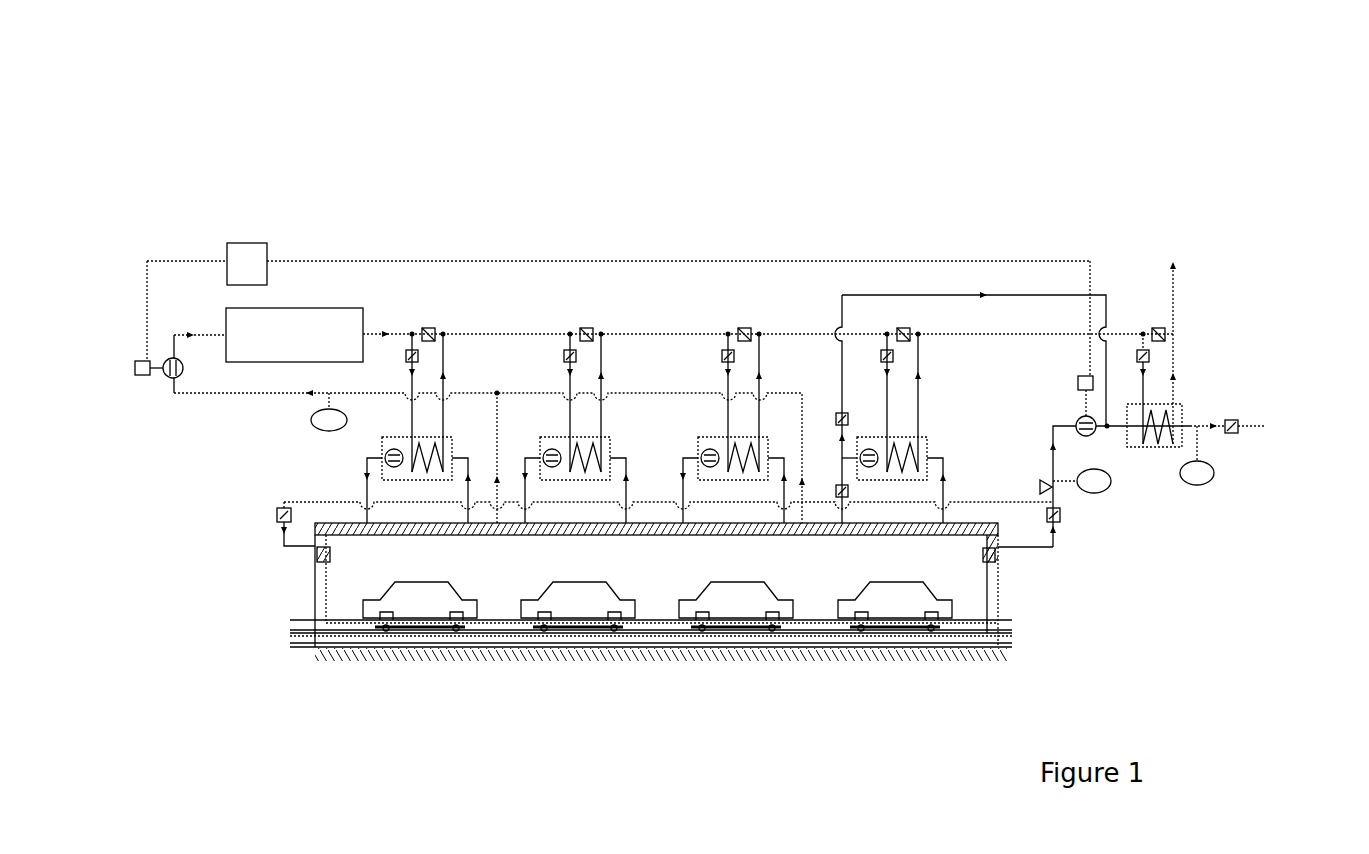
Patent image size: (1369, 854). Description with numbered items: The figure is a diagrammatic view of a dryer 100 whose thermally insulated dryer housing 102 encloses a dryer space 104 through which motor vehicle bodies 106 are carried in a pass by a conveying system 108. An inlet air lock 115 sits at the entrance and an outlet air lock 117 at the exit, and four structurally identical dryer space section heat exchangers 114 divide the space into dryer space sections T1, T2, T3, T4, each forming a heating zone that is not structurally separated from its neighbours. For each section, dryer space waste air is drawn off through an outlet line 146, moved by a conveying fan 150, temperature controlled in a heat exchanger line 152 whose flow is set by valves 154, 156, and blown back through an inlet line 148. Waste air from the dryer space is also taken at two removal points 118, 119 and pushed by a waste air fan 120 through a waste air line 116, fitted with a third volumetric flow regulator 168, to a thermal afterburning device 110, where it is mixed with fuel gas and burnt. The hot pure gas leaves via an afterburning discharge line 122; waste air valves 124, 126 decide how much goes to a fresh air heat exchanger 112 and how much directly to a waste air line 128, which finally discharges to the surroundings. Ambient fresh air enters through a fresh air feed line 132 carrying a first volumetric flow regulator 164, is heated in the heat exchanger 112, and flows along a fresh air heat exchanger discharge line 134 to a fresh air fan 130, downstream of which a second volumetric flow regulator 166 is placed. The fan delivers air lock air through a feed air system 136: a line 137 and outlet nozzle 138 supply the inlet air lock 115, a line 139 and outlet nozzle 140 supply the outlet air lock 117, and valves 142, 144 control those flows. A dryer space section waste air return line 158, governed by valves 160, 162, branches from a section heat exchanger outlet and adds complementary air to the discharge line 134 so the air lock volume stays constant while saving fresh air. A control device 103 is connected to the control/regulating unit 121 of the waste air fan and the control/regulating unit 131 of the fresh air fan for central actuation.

The dryer 100 is at (205, 142).
The dryer housing 102 is at (318, 655).
The control device 103 is at (258, 243).
The dryer space 104 is at (641, 570).
The motor vehicle bodies 106 is at (640, 617).
The conveying system 108 is at (703, 617).
The thermal afterburning device 110 is at (330, 308).
The fresh air heat exchanger 112 is at (1180, 404).
The dryer space section heat exchangers 114 is at (418, 437).
The inlet air lock 115 is at (332, 585).
The waste air line 116 is at (198, 395).
The outlet air lock 117 is at (975, 587).
The removal point 118 is at (498, 521).
The removal point 119 is at (805, 518).
The waste air fan 120 is at (173, 380).
The control/regulating unit 121 is at (138, 360).
The afterburning discharge line 122 is at (411, 328).
The waste air valve 124 is at (1140, 330).
The waste air valve 126 is at (1158, 327).
The waste air line 128 is at (1176, 312).
The fresh air fan 130 is at (1080, 420).
The control/regulating unit 131 is at (1078, 372).
The fresh air feed line 132 is at (1262, 430).
The fresh air heat exchanger discharge line 134 is at (1113, 430).
The feed air system 136 is at (1040, 490).
The line 137 is at (283, 548).
The outlet nozzle 138 is at (317, 555).
The line 139 is at (1045, 552).
The outlet nozzle 140 is at (992, 562).
The valve 142 is at (277, 516).
The valve 144 is at (1060, 520).
The outlet line 146 is at (462, 518).
The inlet line 148 is at (375, 518).
The conveying fan 150 is at (394, 449).
The heat exchanger line 152 is at (440, 450).
The valve 154 is at (406, 356).
The valve 156 is at (430, 328).
The dryer space section waste air return line 158 is at (1000, 295).
The valve 160 is at (840, 478).
The valve 162 is at (836, 417).
The first volumetric flow regulator 164 is at (1205, 485).
The second volumetric flow regulator 166 is at (1105, 492).
The third volumetric flow regulator 168 is at (313, 412).
The dryer space section T1 is at (417, 560).
The dryer space section T2 is at (575, 560).
The dryer space section T3 is at (733, 560).
The dryer space section T4 is at (891, 560).